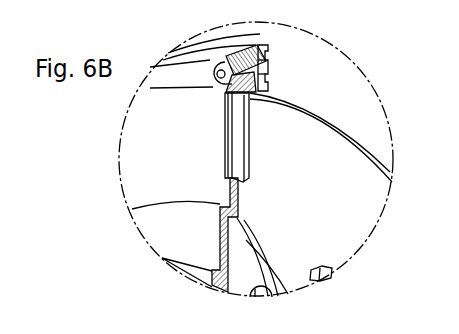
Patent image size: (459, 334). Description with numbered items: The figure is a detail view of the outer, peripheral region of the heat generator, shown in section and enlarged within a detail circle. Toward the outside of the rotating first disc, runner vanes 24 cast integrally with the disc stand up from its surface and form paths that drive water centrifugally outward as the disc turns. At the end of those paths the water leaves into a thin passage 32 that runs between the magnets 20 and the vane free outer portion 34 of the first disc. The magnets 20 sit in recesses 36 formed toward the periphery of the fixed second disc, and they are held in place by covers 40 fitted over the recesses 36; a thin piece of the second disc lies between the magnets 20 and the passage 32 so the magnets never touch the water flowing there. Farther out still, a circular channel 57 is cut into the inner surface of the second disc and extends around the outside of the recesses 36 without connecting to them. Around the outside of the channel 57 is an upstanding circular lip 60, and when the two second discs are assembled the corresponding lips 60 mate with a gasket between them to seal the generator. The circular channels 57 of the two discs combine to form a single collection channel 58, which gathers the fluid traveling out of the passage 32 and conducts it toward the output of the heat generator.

The magnets 20 is at (247, 116).
The runner vanes 24 is at (332, 273).
The thin passage 32 is at (250, 150).
The vane free outer portion 34 is at (290, 222).
The recesses 36 is at (228, 182).
The covers 40 is at (140, 188).
The circular channel 57 is at (255, 83).
The collection channel 58 is at (255, 82).
The circular lip 60 is at (262, 50).